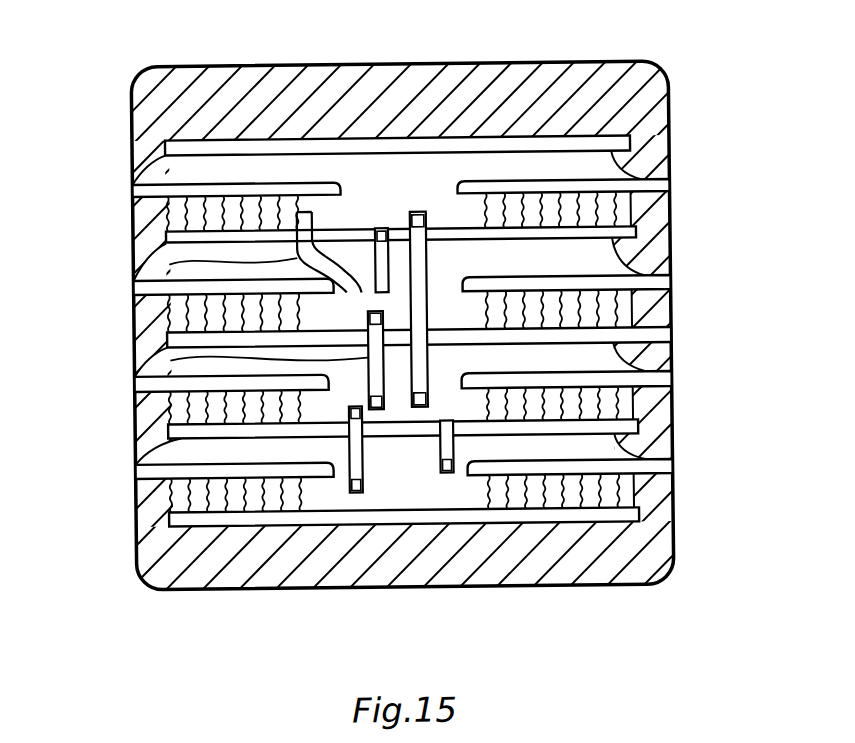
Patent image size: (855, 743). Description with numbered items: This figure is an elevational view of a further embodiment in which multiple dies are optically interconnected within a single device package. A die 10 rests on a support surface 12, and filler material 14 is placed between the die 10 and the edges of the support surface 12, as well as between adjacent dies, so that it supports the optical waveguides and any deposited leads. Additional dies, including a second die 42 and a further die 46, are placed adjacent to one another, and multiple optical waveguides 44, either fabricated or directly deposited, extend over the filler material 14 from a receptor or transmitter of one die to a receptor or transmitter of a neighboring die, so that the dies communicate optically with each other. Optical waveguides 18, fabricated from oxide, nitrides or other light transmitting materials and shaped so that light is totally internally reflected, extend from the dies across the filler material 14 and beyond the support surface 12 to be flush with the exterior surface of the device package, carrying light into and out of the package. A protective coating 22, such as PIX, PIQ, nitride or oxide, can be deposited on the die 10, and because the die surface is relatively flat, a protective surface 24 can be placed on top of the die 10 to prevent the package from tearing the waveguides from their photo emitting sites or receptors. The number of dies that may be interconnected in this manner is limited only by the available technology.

The die 10 is at (388, 501).
The support surface 12 is at (167, 516).
The filler material 14 is at (632, 500).
The optical waveguide 18 is at (134, 189).
The protective coating 22 is at (672, 158).
The protective surface 24 is at (632, 152).
The second die 42 is at (485, 419).
The optical waveguide 44 is at (379, 230).
The die 46 is at (402, 210).